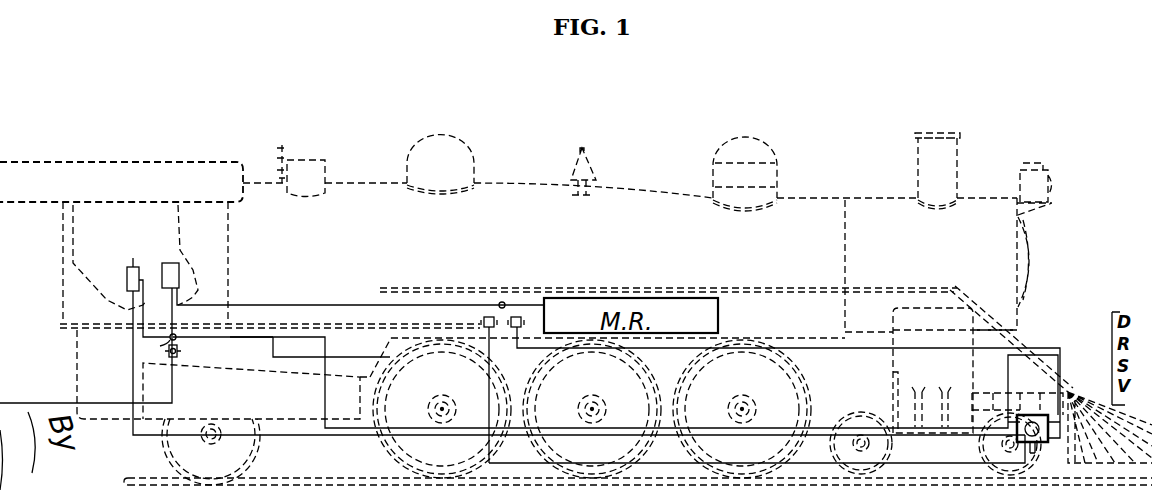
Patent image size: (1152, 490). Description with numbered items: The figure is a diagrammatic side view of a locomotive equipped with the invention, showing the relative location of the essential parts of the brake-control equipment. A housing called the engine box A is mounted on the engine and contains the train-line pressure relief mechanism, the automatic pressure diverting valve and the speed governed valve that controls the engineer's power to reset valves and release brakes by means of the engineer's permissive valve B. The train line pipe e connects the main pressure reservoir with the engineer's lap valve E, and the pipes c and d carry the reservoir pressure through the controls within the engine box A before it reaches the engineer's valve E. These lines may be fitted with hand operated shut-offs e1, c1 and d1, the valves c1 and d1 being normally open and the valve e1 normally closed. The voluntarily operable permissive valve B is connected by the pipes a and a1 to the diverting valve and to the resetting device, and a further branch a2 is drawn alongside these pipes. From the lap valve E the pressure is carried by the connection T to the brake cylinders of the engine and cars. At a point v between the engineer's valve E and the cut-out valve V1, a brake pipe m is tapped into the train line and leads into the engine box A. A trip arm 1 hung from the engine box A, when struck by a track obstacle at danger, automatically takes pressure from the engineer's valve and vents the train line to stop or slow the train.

The engineer's permissive valve B is at (127, 272).
The engineer's valve E is at (173, 277).
The train line pipe e is at (326, 305).
The hand operated shut-off e1 is at (504, 302).
The hand operated shut-off d1 is at (487, 320).
The hand operated shut-off c1 is at (521, 320).
The pipe c is at (828, 340).
The pipe d is at (489, 392).
The pipe a is at (327, 341).
The pipe a1 is at (304, 442).
The brake pipe branch a2 is at (943, 440).
The connection T is at (110, 401).
The cut-out valve V1 is at (181, 350).
The tap point v is at (161, 337).
The brake pipe m is at (243, 337).
The engine box A is at (1030, 425).
The trip arm 1 is at (1035, 449).